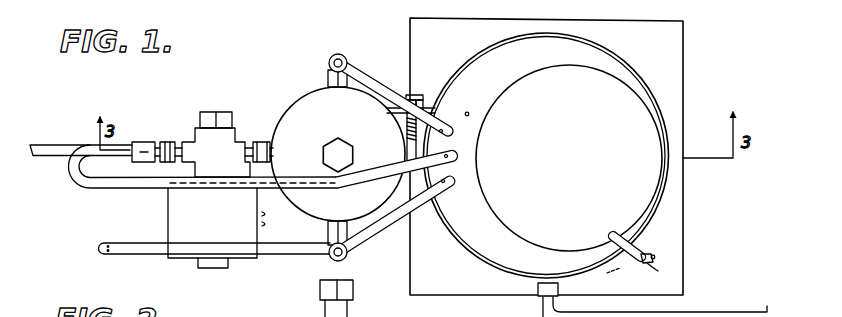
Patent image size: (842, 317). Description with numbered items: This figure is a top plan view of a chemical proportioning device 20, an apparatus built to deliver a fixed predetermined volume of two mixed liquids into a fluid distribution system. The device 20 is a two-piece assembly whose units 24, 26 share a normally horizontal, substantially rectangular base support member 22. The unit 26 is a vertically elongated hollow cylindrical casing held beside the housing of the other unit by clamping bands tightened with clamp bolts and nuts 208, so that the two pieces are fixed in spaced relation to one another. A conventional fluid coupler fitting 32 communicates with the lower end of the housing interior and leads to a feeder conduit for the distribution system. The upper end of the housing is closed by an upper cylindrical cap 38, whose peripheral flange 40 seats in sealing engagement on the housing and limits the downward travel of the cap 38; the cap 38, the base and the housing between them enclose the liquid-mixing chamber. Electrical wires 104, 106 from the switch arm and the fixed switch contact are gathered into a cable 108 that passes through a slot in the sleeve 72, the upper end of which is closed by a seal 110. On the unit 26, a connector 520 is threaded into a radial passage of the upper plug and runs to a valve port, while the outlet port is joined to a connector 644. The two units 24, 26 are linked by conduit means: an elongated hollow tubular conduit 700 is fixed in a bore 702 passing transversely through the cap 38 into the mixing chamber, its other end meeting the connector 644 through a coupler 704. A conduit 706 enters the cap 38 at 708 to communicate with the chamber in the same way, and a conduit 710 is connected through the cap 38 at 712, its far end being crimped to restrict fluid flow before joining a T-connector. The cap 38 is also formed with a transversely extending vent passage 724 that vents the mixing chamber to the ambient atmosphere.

The chemical proportioning device 20 is at (362, 42).
The base support member 22 is at (677, 68).
The unit 24 is at (651, 51).
The unit 26 is at (288, 112).
The fluid coupler fitting 32 is at (561, 292).
The upper cylindrical cap 38 is at (474, 240).
The peripheral flange 40 is at (490, 266).
The sleeve 72 is at (566, 68).
The wire 104 is at (655, 259).
The wire 106 is at (656, 273).
The cable 108 is at (631, 246).
The seal 110 is at (612, 206).
The clamp nut 208 is at (423, 95).
The connector 520 is at (252, 140).
The connector 644 is at (163, 142).
The tubular conduit 700 is at (378, 172).
The bore 702 is at (461, 153).
The coupler 704 is at (140, 140).
The conduit 706 is at (373, 77).
The coupler 708 is at (461, 131).
The conduit 710 is at (390, 222).
The bore 712 is at (462, 178).
The vent passage 724 is at (468, 112).